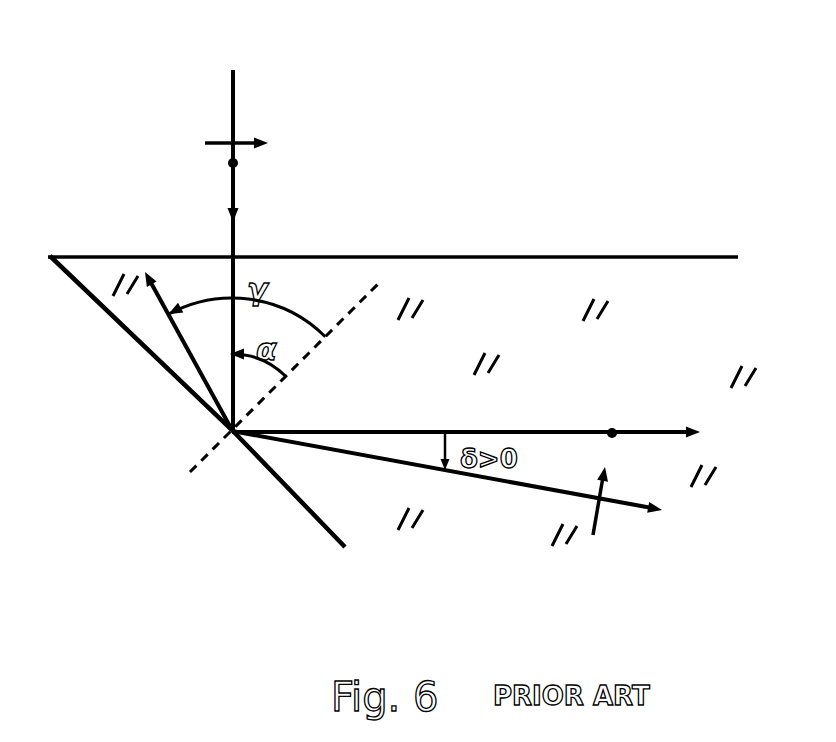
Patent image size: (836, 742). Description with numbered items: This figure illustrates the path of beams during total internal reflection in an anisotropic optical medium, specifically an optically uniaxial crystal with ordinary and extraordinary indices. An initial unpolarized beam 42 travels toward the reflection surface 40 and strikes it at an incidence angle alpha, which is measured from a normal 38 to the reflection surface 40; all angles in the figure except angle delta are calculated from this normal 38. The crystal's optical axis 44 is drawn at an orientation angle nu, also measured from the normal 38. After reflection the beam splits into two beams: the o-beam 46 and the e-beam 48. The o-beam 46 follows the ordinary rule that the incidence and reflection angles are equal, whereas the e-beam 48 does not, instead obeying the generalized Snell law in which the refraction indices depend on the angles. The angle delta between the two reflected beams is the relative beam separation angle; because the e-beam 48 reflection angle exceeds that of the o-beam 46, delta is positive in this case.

The normal 38 is at (198, 460).
The reflection surface 40 is at (300, 507).
The initial unpolarized beam 42 is at (278, 233).
The optical axis 44 is at (179, 336).
The o-beam 46 is at (645, 428).
The e-beam 48 is at (543, 490).